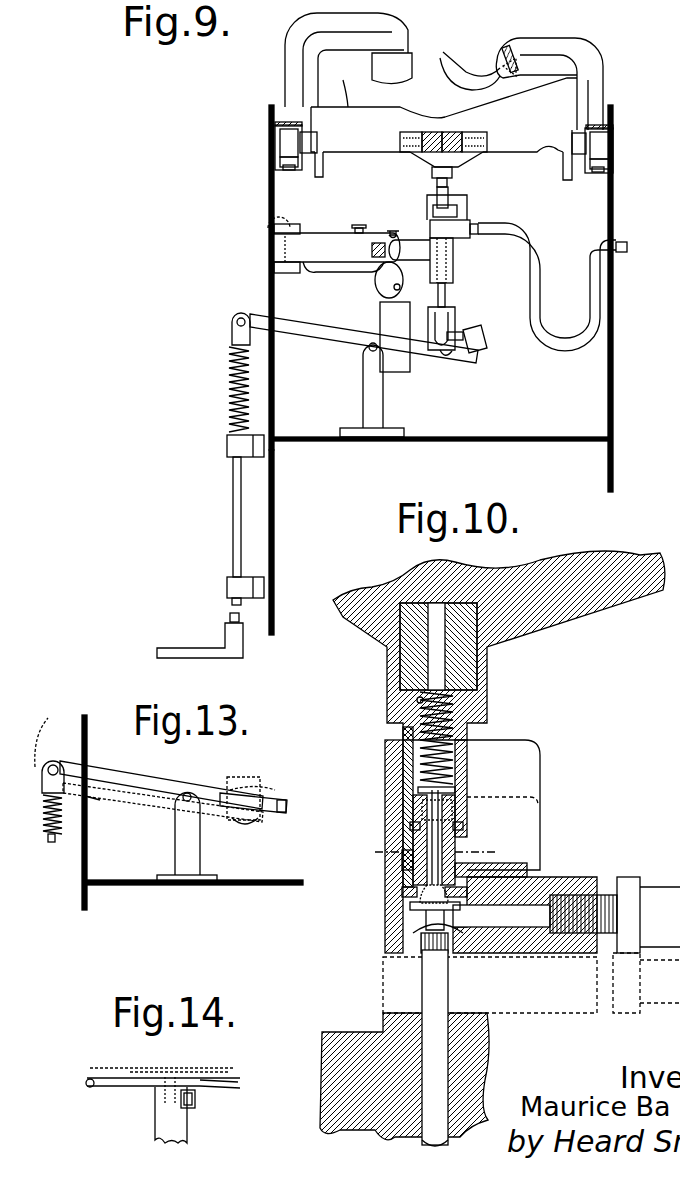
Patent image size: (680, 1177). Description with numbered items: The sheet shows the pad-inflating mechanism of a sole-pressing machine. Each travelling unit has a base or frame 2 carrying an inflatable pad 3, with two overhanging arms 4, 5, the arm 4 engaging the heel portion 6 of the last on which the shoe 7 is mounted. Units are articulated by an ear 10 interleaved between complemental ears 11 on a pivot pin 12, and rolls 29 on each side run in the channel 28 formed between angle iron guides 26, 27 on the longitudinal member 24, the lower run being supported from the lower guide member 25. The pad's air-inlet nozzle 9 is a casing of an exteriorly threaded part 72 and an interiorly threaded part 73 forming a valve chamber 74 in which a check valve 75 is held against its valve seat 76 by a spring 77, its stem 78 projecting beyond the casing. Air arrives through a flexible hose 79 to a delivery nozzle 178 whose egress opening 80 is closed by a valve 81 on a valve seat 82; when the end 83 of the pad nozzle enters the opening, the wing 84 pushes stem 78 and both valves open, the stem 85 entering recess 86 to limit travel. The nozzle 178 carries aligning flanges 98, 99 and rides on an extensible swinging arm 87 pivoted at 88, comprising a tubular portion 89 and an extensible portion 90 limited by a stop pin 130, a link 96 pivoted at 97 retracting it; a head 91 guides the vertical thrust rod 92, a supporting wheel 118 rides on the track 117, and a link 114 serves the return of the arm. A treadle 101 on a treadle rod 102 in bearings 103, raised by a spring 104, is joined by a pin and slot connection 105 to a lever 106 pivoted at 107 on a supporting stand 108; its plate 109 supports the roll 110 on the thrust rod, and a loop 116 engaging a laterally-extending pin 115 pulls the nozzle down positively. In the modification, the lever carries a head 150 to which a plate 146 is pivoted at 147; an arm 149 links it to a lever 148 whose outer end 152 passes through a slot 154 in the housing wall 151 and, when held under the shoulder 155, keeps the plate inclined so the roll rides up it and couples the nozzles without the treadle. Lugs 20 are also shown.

In FIG. 10, the supporting base or frame 2 is at (597, 614).
In FIG. 10, the inflatable pad 3 is at (562, 586).
In FIG. 9, the overhanging arm 4 is at (317, 44).
In FIG. 9, the overhanging arm 5 is at (575, 63).
In FIG. 9, the heel portion 6 is at (408, 66).
In FIG. 9, the shoe 7 is at (463, 70).
In FIG. 9, the air-inlet nozzle 9 is at (448, 191).
In FIG. 9, the ear 10 is at (448, 134).
In FIG. 9, the complemental ears 11 is at (400, 134).
In FIG. 10, the complemental ears 11 is at (431, 851).
In FIG. 9, the pivot pin 12 is at (432, 134).
In FIG. 9, the lug 20 is at (323, 170).
In FIG. 9, the longitudinal member 24 is at (283, 132).
In FIG. 9, the lower guide member 25 is at (276, 494).
In FIG. 9, the angle iron guide 26 is at (287, 124).
In FIG. 9, the angle iron guide 27 is at (292, 180).
In FIG. 9, the channel 28 is at (293, 168).
In FIG. 9, the roll 29 is at (295, 158).
In FIG. 10, the exteriorly threaded part 72 is at (417, 700).
In FIG. 10, the interiorly threaded part 73 is at (398, 793).
In FIG. 10, the valve chamber 74 is at (453, 780).
In FIG. 10, the check valve 75 is at (446, 797).
In FIG. 10, the valve seat 76 is at (455, 829).
In FIG. 10, the spring 77 is at (448, 733).
In FIG. 9, the stem 78 is at (447, 212).
In FIG. 10, the stem 78 is at (400, 834).
In FIG. 9, the flexible hose 79 is at (538, 263).
In FIG. 10, the egress opening 80 is at (398, 883).
In FIG. 10, the valve 81 is at (418, 912).
In FIG. 10, the valve seat 82 is at (407, 895).
In FIG. 10, the end of valve casing member 83 is at (483, 870).
In FIG. 10, the wing 84 is at (412, 927).
In FIG. 10, the stem 85 is at (417, 940).
In FIG. 10, the recess 86 is at (455, 947).
In FIG. 9, the extensible swinging arm 87 is at (372, 270).
In FIG. 9, the pivot 88 is at (268, 214).
In FIG. 9, the tubular portion 89 is at (327, 237).
In FIG. 9, the extensible portion 90 is at (410, 250).
In FIG. 10, the extensible portion 90 is at (350, 1032).
In FIG. 9, the head 91 is at (454, 269).
In FIG. 10, the head 91 is at (478, 1079).
In FIG. 9, the thrust rod 92 is at (447, 296).
In FIG. 10, the thrust rod 92 is at (423, 1141).
In FIG. 9, the link 96 is at (320, 233).
In FIG. 9, the pivot 97 is at (273, 233).
In FIG. 9, the aligning flange 98 is at (462, 203).
In FIG. 10, the aligning flange 98 is at (515, 745).
In FIG. 9, the aligning flange 99 is at (428, 197).
In FIG. 10, the aligning flange 99 is at (400, 752).
In FIG. 9, the treadle 101 is at (186, 648).
In FIG. 9, the treadle rod 102 is at (232, 511).
In FIG. 13, the treadle rod 102 is at (55, 843).
In FIG. 9, the bearings 103 is at (228, 447).
In FIG. 9, the spring 104 is at (231, 378).
In FIG. 13, the spring 104 is at (48, 835).
In FIG. 9, the pin and slot connection 105 is at (241, 317).
In FIG. 13, the pin and slot connection 105 is at (56, 764).
In FIG. 9, the lever 106 is at (323, 342).
In FIG. 13, the lever 106 is at (130, 779).
In FIG. 9, the pivot 107 is at (372, 343).
In FIG. 13, the pivot 107 is at (187, 793).
In FIG. 9, the supporting stand 108 is at (383, 401).
In FIG. 13, the supporting stand 108 is at (175, 848).
In FIG. 14, the supporting stand 108 is at (158, 1134).
In FIG. 9, the plate 109 is at (448, 357).
In FIG. 9, the roll 110 is at (432, 328).
In FIG. 9, the link 114 is at (371, 240).
In FIG. 9, the laterally-extending pin 115 is at (463, 332).
In FIG. 9, the loop 116 is at (478, 338).
In FIG. 9, the track 117 is at (385, 305).
In FIG. 9, the supporting wheel 118 is at (376, 283).
In FIG. 9, the stop pin 130 is at (394, 230).
In FIG. 13, the plate 146 is at (250, 790).
In FIG. 14, the plate 146 is at (163, 1077).
In FIG. 13, the pivot 147 is at (278, 813).
In FIG. 14, the pivot 147 is at (89, 1090).
In FIG. 13, the lever 148 is at (250, 827).
In FIG. 14, the lever 148 is at (197, 1110).
In FIG. 13, the arm 149 is at (273, 790).
In FIG. 14, the arm 149 is at (236, 1086).
In FIG. 13, the head 150 is at (280, 796).
In FIG. 14, the head 150 is at (148, 1088).
In FIG. 9, the wall 151 is at (272, 274).
In FIG. 13, the wall 151 is at (86, 717).
In FIG. 13, the outer end 152 is at (47, 725).
In FIG. 13, the slot 154 is at (88, 828).
In FIG. 13, the shoulder 155 is at (88, 812).
In FIG. 9, the delivery nozzle 178 is at (458, 232).
In FIG. 10, the delivery nozzle 178 is at (513, 945).